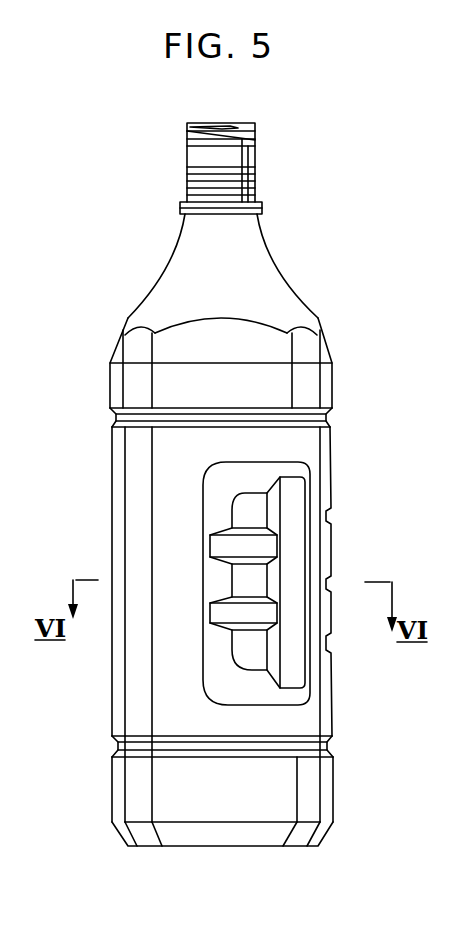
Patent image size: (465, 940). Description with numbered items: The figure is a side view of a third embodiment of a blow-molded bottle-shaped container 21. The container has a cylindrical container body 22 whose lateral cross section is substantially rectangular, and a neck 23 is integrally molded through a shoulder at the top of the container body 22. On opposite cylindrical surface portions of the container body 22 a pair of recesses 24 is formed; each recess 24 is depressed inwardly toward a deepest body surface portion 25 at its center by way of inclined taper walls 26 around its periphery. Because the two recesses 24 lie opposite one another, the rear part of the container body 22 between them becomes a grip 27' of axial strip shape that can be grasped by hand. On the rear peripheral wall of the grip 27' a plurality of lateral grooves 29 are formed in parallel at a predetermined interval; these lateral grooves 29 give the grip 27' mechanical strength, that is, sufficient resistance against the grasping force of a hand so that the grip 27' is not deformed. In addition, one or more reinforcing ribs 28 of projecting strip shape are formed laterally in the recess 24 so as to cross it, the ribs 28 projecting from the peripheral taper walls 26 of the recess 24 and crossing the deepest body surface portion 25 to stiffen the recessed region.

The bottle-shaped container 21 is at (106, 351).
The container body 22 is at (163, 453).
The neck 23 is at (253, 170).
The recess 24 is at (266, 468).
The deepest body surface portion 25 is at (256, 576).
The inclined taper wall 26 is at (210, 675).
The grip 27' is at (333, 582).
The reinforcing rib 28 is at (210, 610).
The lateral groove 29 is at (333, 645).